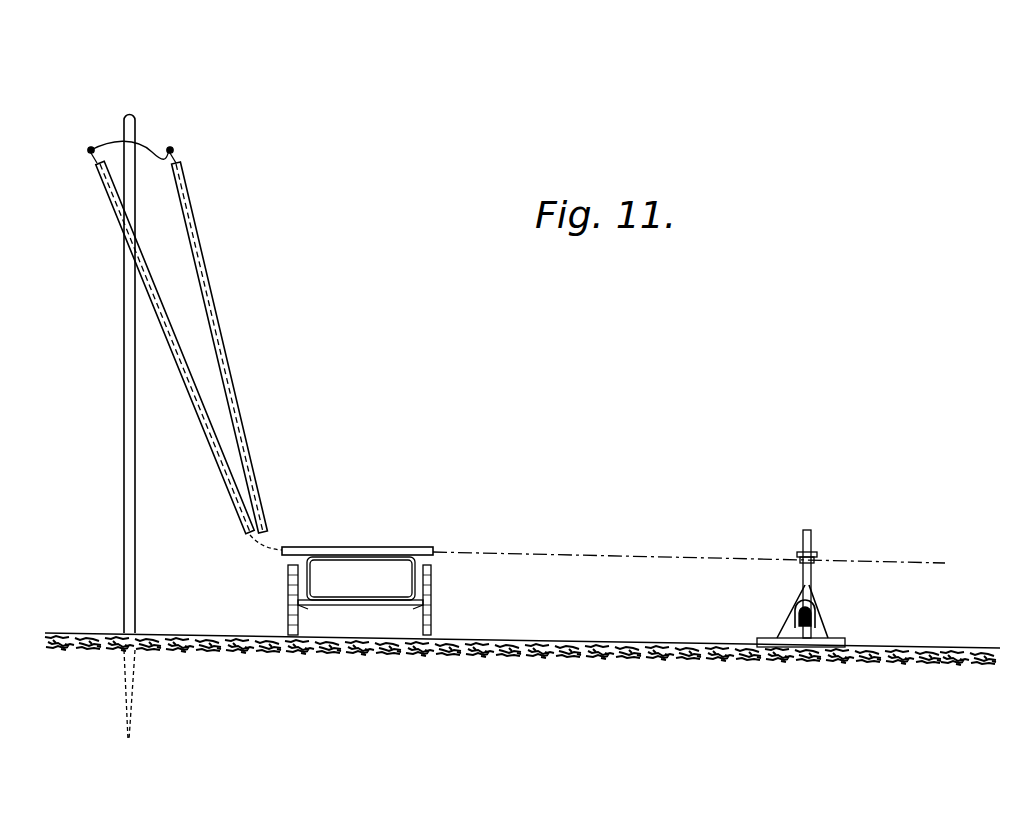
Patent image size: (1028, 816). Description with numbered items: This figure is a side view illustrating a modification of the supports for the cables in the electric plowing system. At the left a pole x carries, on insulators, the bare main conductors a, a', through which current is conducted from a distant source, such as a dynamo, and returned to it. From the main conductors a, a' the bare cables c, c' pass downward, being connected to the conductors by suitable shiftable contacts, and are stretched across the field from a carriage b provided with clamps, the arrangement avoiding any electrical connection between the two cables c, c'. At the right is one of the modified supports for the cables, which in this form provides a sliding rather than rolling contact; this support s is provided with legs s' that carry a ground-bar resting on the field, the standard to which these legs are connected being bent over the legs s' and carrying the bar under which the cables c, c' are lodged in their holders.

The bare main conductor a is at (126, 143).
The bare main conductor a' is at (176, 143).
The bare cable c is at (175, 347).
The bare cable c' is at (220, 347).
The pole x is at (137, 428).
The carriage b is at (357, 591).
The anchor post s is at (800, 607).
The leg s' is at (811, 609).